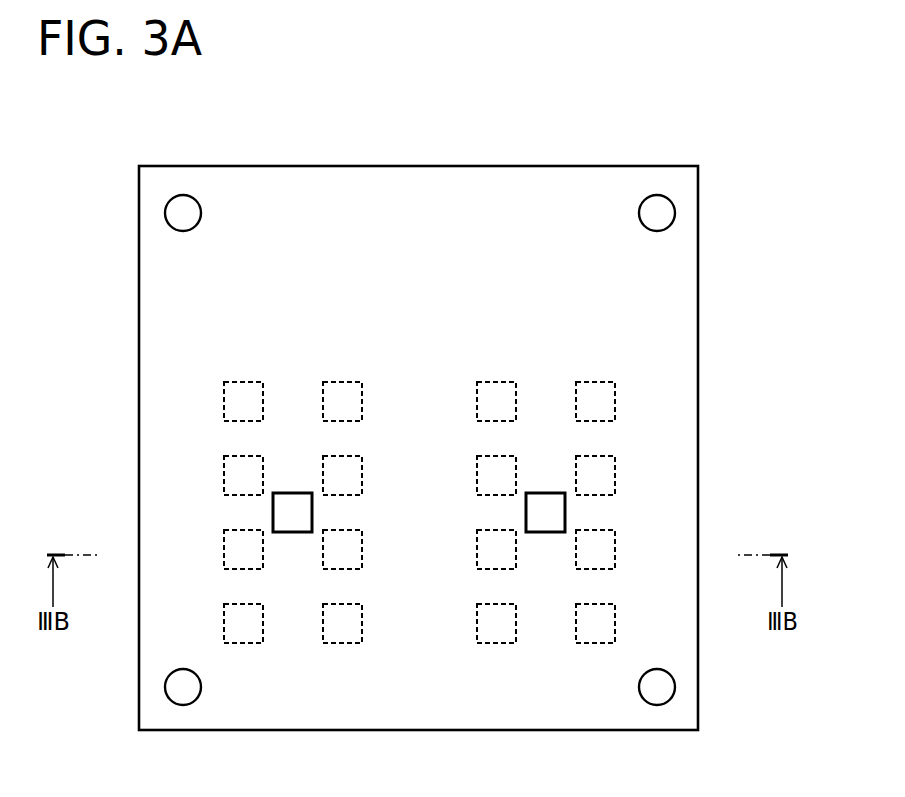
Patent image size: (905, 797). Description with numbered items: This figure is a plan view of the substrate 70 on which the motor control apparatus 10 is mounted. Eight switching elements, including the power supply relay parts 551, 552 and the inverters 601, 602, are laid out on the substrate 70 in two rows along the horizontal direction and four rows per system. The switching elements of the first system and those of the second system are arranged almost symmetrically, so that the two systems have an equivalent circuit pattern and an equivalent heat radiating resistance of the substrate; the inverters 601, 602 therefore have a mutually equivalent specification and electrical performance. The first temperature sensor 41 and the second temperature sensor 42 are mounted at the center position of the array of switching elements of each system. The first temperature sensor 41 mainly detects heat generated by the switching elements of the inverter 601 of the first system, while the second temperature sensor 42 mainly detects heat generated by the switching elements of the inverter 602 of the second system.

The motor control apparatus 10 is at (423, 150).
The substrate 70 is at (612, 200).
The power supply relay part 551 is at (190, 465).
The inverter 601 is at (235, 362).
The power supply relay part 552 is at (656, 465).
The inverter 602 is at (615, 362).
The first temperature sensor 41 is at (294, 520).
The second temperature sensor 42 is at (548, 518).